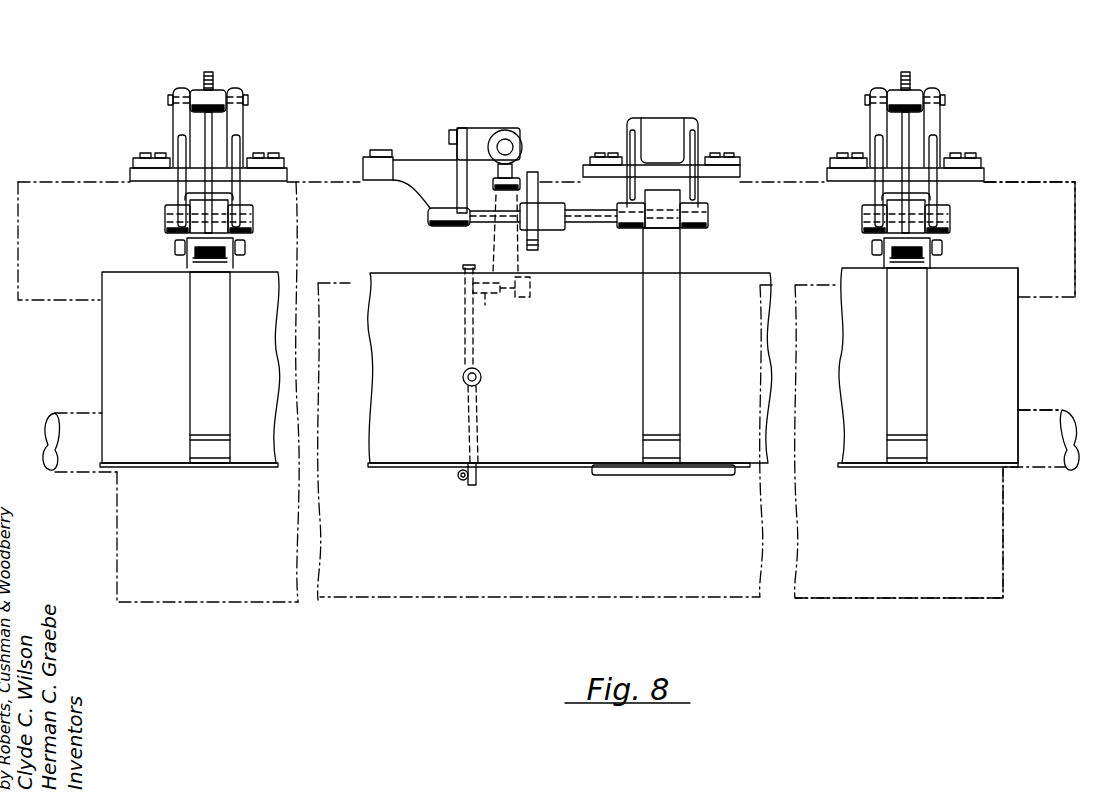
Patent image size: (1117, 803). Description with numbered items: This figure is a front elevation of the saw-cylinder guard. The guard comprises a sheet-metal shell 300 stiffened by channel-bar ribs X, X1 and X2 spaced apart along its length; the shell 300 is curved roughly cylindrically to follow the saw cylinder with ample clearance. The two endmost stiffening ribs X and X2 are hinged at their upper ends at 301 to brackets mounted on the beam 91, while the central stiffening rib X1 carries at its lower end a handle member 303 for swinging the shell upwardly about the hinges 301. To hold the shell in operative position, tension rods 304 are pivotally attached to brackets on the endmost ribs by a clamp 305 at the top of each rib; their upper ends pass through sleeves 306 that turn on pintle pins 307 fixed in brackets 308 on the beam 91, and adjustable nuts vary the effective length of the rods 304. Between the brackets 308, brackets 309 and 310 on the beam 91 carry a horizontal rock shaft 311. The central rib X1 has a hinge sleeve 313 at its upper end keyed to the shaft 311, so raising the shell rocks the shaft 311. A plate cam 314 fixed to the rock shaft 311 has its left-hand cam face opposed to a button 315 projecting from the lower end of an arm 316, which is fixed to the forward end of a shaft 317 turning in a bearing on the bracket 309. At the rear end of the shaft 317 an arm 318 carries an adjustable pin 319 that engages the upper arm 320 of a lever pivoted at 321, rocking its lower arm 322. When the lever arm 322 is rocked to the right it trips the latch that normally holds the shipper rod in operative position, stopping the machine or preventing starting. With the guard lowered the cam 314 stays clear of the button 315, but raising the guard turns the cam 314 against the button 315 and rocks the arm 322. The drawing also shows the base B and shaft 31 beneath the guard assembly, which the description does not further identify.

The shell 300 is at (1012, 366).
The hinge 301 is at (177, 216).
The handle member 303 is at (660, 470).
The tension rod 304 is at (208, 140).
The lower clamp 305 is at (187, 266).
The sleeve 306 is at (200, 95).
The pintle pin 307 is at (168, 100).
The bracket 308 is at (234, 131).
The bracket 309 is at (460, 175).
The bracket 310 is at (700, 190).
The rock shaft 311 is at (603, 226).
The hinge sleeve 313 is at (673, 228).
The plate cam 314 is at (539, 244).
The button 315 is at (523, 178).
The arm 316 is at (500, 170).
The shaft 317 is at (507, 143).
The arm 318 is at (532, 283).
The adjustable pin 319 is at (490, 300).
The upper arm 320 is at (464, 327).
The pivot 321 is at (482, 375).
The lower arm 322 is at (473, 482).
The shaft 31 is at (1050, 410).
The beam 91 is at (1047, 185).
The base B is at (990, 550).
The stiffening rib X is at (918, 362).
The central stiffening rib X1 is at (657, 357).
The stiffening rib X2 is at (218, 358).